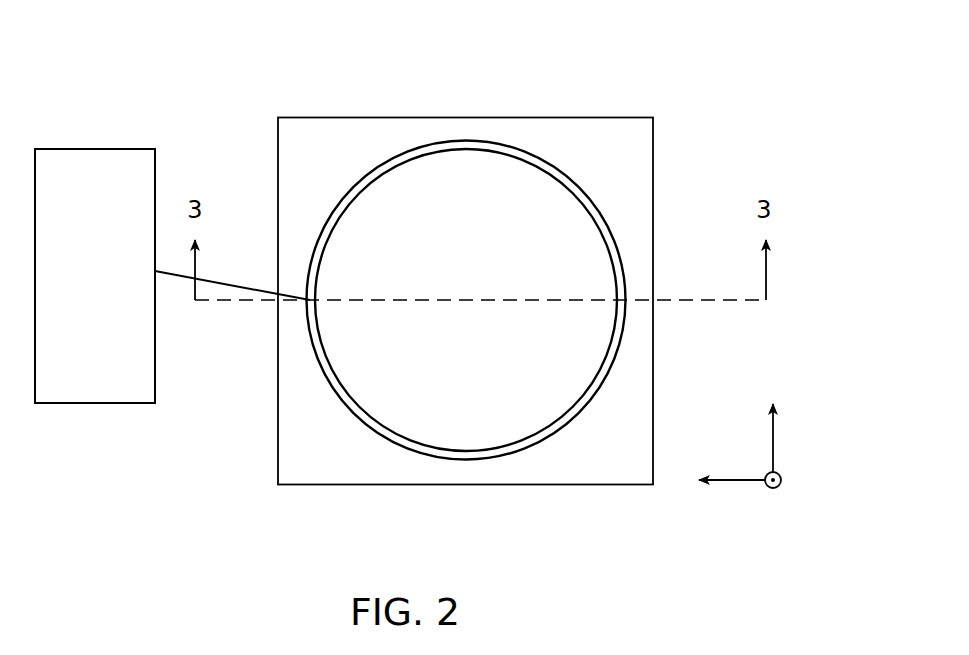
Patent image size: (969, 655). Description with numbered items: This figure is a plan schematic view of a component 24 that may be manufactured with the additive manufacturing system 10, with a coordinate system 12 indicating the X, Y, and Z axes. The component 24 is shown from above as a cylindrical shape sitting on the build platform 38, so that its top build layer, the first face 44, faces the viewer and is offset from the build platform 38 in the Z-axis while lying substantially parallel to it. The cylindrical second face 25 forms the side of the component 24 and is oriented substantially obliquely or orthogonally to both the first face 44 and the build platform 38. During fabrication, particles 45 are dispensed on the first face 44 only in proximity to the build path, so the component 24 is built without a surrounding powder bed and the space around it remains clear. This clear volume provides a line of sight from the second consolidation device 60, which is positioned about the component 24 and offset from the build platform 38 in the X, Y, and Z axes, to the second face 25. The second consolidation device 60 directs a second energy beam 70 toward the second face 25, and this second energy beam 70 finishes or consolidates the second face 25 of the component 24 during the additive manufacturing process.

The additive manufacturing system 10 is at (700, 59).
The coordinate system 12 is at (783, 362).
The component 24 is at (479, 383).
The second face 25 is at (467, 140).
The build platform 38 is at (635, 172).
The first face 44 is at (350, 363).
The particles 45 is at (430, 175).
The second consolidation device 60 is at (98, 149).
The second energy beam 70 is at (220, 280).